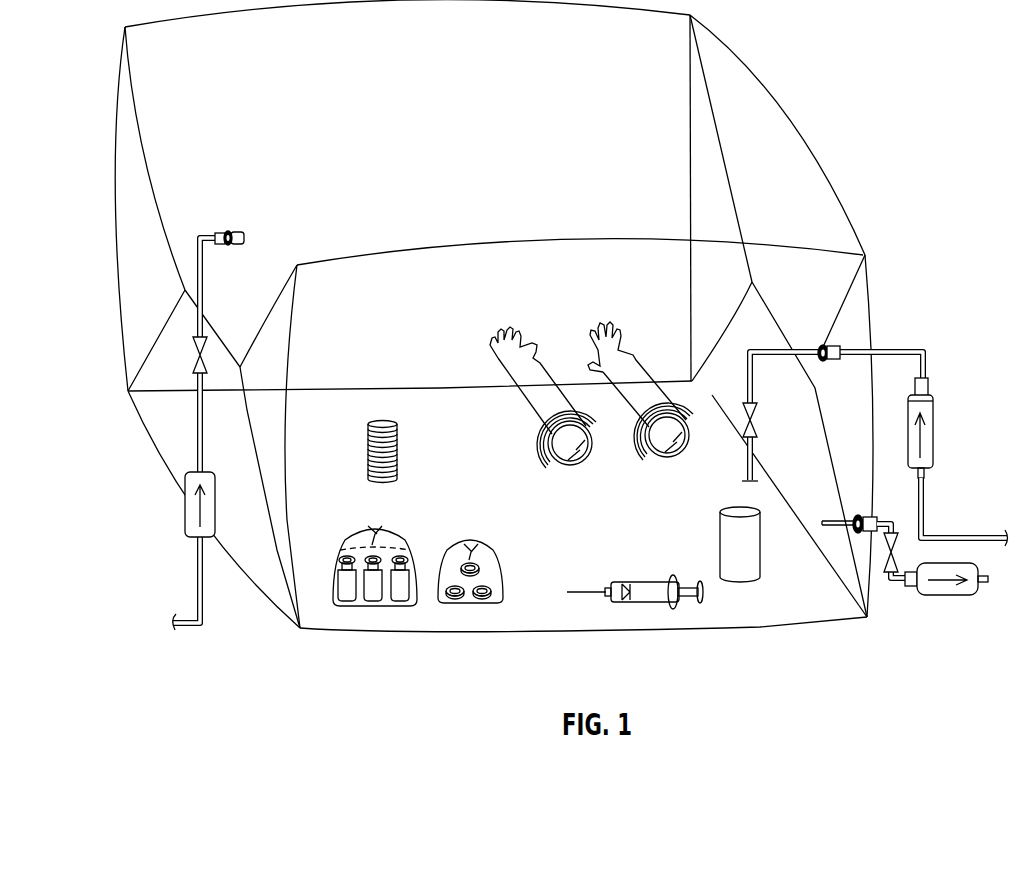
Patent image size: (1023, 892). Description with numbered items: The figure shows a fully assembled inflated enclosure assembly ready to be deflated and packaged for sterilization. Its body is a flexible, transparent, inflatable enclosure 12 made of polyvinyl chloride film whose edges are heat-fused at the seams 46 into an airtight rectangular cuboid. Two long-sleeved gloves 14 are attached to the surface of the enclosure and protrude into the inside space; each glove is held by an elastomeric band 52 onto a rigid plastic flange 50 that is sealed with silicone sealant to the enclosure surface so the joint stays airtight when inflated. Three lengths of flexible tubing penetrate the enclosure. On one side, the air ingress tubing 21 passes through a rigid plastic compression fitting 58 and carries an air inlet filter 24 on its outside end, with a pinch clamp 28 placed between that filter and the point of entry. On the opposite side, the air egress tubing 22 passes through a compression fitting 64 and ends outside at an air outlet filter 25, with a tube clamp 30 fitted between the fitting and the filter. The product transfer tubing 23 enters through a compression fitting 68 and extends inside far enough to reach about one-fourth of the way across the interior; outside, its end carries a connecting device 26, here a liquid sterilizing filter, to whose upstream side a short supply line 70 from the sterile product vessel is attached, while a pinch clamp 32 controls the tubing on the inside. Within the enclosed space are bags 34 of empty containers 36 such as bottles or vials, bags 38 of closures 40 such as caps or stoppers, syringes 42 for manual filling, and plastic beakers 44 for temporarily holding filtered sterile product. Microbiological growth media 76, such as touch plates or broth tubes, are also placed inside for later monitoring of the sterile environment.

The flexible inflatable enclosure 12 is at (790, 120).
The gloves 14 is at (490, 350).
The air ingress tubing 21 is at (203, 282).
The air egress tubing 22 is at (893, 585).
The product transfer tubing 23 is at (786, 350).
The air inlet filter 24 is at (185, 505).
The air outlet filter 25 is at (956, 596).
The connecting device 26 is at (935, 430).
The pinch clamp 28 is at (196, 362).
The tube clamp 30 is at (893, 543).
The pinch clamp 32 is at (760, 422).
The bags of containers 34 is at (397, 530).
The containers 36 is at (373, 593).
The bags of closures 38 is at (503, 583).
The closures 40 is at (478, 566).
The syringes 42 is at (660, 604).
The beakers 44 is at (762, 566).
The seams 46 is at (140, 138).
The rigid plastic flanges 50 is at (546, 457).
The elastomeric bands 52 is at (549, 434).
The compression fitting 58 is at (228, 232).
The compression fitting 64 is at (857, 517).
The compression fitting 68 is at (823, 342).
The supply line tubing 70 is at (918, 488).
The microbiological growth media 76 is at (381, 423).